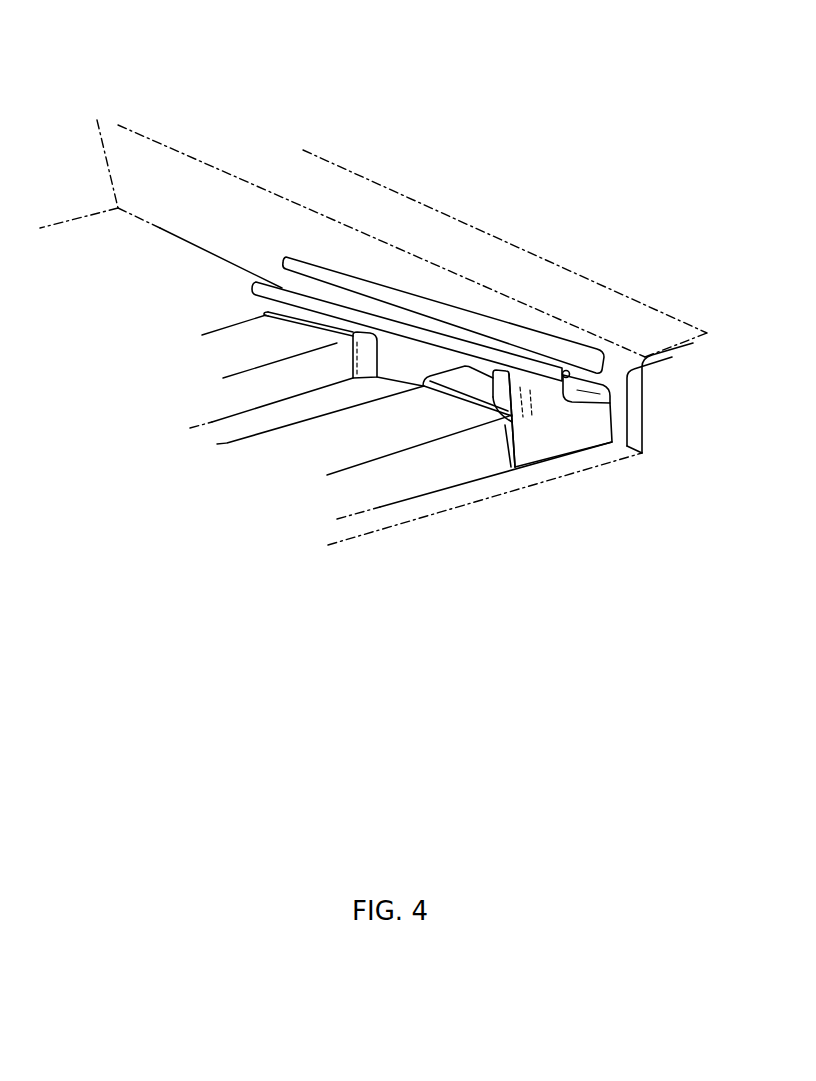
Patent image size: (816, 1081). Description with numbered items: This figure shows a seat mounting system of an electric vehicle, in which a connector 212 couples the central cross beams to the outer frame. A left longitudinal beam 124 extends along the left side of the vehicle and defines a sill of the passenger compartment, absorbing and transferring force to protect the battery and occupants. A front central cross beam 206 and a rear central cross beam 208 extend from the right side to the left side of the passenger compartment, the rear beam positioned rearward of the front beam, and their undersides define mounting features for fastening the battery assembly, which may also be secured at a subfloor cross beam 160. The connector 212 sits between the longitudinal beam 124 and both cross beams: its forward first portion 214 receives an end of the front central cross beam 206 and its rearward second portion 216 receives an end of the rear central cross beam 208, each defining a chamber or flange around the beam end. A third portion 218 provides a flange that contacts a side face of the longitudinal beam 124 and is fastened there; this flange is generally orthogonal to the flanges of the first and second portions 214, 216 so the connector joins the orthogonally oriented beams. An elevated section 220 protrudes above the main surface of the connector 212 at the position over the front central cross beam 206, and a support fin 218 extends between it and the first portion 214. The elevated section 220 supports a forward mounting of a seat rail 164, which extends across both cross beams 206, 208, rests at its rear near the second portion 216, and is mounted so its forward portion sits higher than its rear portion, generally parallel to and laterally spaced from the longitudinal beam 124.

The left longitudinal beam 124 is at (602, 310).
The subfloor cross beam 160 is at (502, 413).
The seat rail 164 is at (307, 258).
The front central cross beam 206 is at (347, 492).
The rear central cross beam 208 is at (222, 348).
The connector 212 is at (423, 365).
The first portion 214 is at (580, 423).
The second portion 216 is at (367, 347).
The third portion 218 is at (617, 408).
The elevated section 220 is at (557, 393).